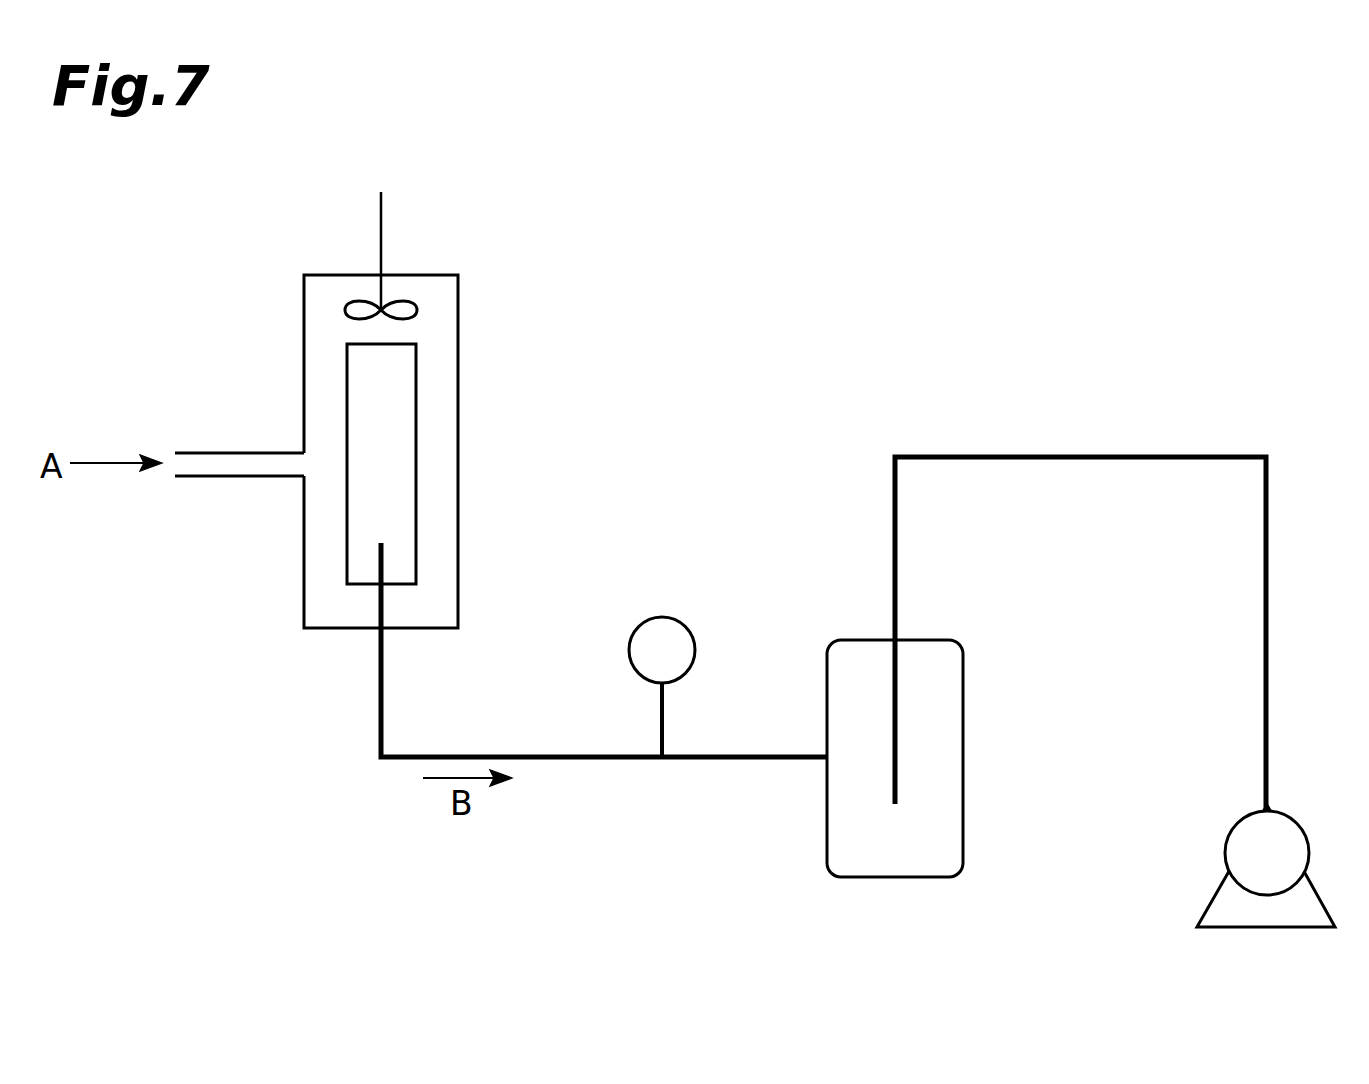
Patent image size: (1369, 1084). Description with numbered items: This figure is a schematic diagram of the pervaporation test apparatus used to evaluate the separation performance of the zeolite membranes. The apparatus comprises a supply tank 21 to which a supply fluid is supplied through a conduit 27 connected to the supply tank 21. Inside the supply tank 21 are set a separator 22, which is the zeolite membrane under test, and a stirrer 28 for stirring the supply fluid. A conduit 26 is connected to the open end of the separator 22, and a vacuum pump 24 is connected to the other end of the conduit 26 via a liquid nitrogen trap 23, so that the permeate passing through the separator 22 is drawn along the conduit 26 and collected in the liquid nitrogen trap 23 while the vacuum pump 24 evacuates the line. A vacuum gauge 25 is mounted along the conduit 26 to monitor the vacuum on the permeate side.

The supply tank 21 is at (459, 325).
The separator 22 is at (416, 375).
The liquid nitrogen trap 23 is at (964, 705).
The vacuum pump 24 is at (1305, 833).
The vacuum gauge 25 is at (667, 618).
The conduit 26 is at (381, 692).
The conduit 27 is at (226, 477).
The stirrer 28 is at (392, 302).